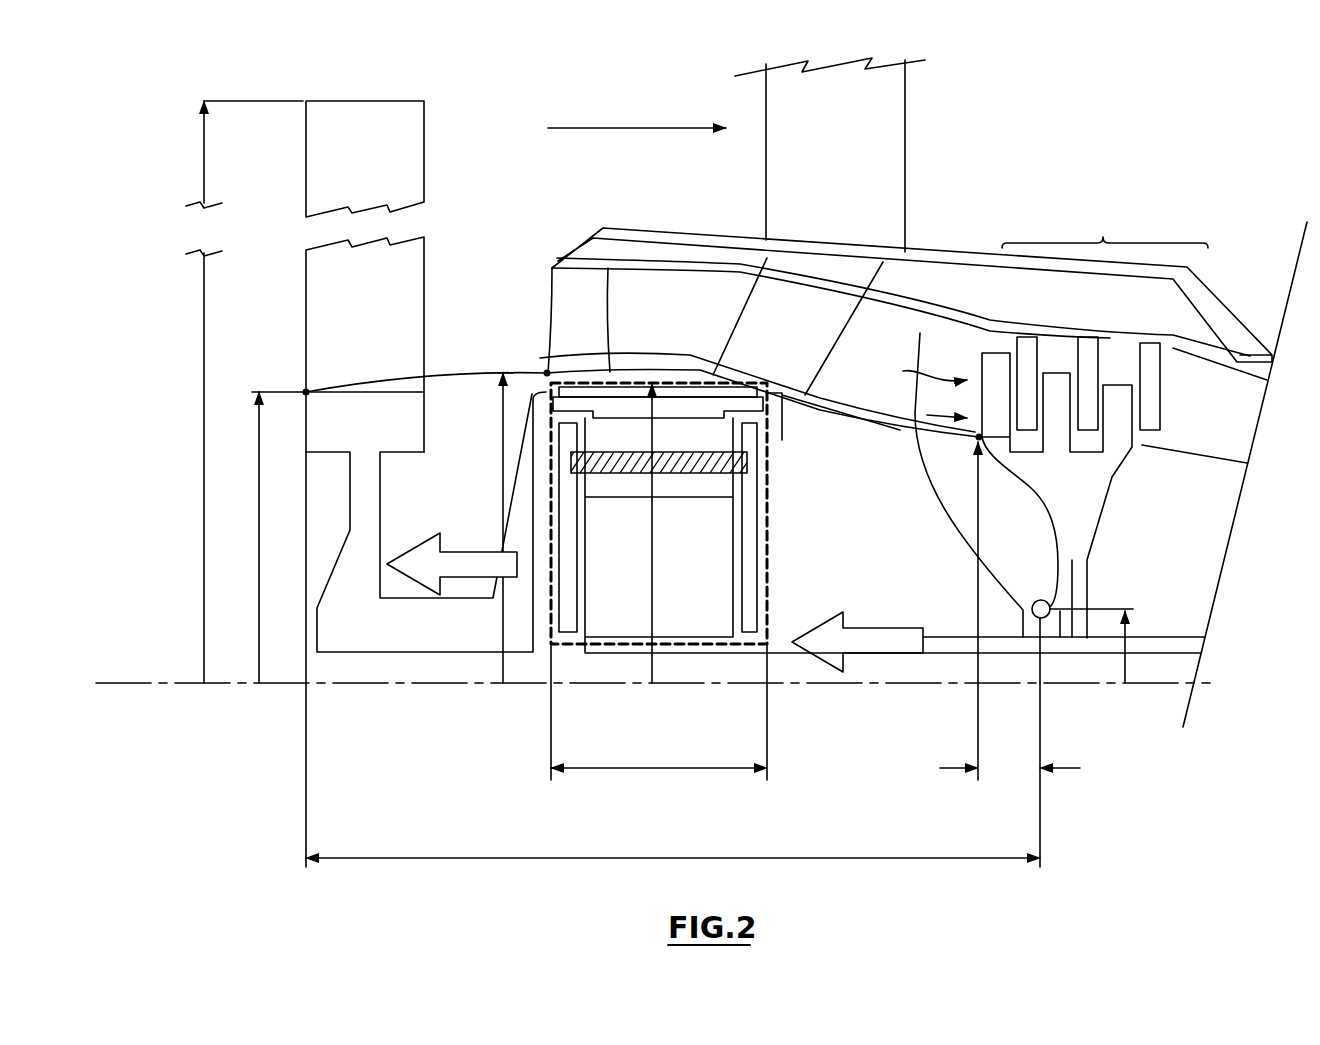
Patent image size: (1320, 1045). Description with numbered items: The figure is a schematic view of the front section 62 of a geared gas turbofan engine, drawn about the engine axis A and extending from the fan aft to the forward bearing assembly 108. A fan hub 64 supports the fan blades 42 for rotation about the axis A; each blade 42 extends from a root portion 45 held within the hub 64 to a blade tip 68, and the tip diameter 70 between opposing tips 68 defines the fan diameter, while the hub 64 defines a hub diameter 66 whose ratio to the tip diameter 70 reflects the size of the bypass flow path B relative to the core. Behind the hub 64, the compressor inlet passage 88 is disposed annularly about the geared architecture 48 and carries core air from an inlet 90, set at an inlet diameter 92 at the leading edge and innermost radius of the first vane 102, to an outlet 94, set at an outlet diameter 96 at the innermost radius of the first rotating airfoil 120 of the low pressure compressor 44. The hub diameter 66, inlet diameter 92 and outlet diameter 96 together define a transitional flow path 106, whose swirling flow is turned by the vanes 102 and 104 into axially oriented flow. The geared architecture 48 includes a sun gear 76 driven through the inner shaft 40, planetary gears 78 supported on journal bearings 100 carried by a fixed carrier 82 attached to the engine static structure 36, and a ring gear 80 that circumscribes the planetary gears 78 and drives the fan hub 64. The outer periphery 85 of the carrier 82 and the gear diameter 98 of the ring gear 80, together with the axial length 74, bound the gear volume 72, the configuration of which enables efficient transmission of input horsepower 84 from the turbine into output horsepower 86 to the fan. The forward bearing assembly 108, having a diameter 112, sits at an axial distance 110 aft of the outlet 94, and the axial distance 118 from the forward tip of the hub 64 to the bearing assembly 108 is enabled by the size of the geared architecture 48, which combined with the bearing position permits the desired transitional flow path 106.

The engine static structure 36 is at (835, 343).
The inner shaft 40 is at (993, 643).
The fan blade 42 is at (398, 312).
The low pressure compressor 44 is at (1103, 237).
The root portion 45 is at (336, 386).
The geared architecture 48 is at (543, 663).
The front section 62 is at (1071, 203).
The fan hub 64 is at (373, 432).
The hub diameter 66 is at (259, 550).
The blade tip 68 is at (386, 96).
The tip diameter 70 is at (204, 396).
The gear volume 72 is at (768, 530).
The axial length 74 is at (652, 768).
The sun gear 76 is at (717, 600).
The planetary gears 78 is at (720, 485).
The ring gear 80 is at (772, 440).
The carrier 82 is at (753, 563).
The input horsepower 84 is at (885, 632).
The outer periphery 85 is at (768, 503).
The output horsepower 86 is at (468, 562).
The compressor inlet passage 88 is at (680, 303).
The inlet 90 is at (549, 318).
The inlet diameter 92 is at (500, 422).
The outlet 94 is at (920, 388).
The outlet diameter 96 is at (982, 557).
The gear diameter 98 is at (653, 560).
The journal bearings 100 is at (705, 403).
The first vane 102 is at (577, 300).
The vane 104 is at (835, 343).
The transitional flow path 106 is at (655, 352).
The forward bearing assembly 108 is at (1052, 596).
The axial distance 110 is at (1068, 767).
The diameter of the bearing assembly 112 is at (1125, 648).
The axial distance 118 is at (727, 858).
The first rotating airfoil 120 is at (993, 375).
The axis A is at (135, 683).
The bypass flow path B is at (637, 112).